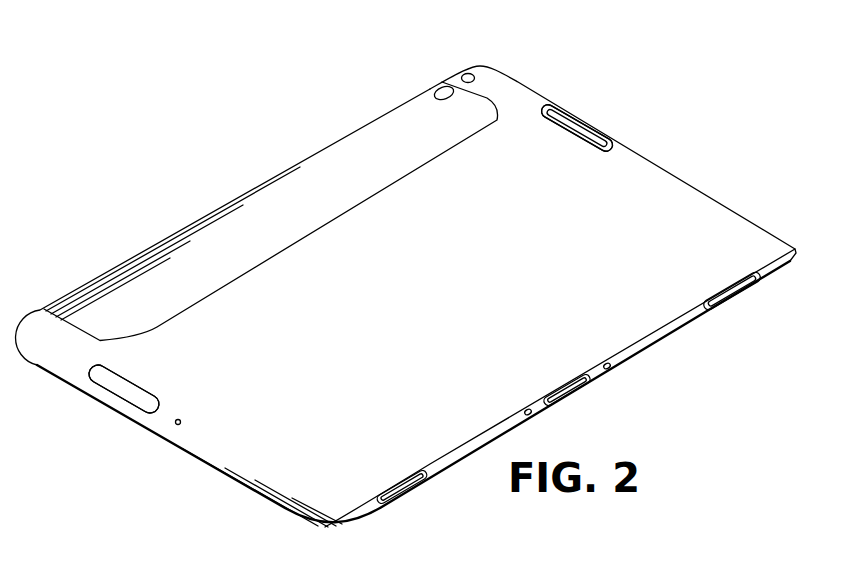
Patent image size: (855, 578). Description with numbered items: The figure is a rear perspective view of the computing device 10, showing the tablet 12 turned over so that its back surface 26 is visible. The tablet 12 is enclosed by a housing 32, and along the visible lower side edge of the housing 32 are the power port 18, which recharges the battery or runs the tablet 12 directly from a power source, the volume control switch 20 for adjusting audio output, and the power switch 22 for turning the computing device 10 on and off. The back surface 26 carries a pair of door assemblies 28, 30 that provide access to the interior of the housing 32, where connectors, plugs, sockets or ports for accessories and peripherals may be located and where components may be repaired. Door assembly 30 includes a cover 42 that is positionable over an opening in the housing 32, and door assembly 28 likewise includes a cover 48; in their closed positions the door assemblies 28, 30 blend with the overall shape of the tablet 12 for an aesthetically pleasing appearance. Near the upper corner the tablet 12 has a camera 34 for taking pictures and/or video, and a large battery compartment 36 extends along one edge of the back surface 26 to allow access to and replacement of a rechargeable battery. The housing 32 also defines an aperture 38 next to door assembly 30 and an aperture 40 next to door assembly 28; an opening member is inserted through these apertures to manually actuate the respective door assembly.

The computing device 10 is at (406, 297).
The tablet 12 is at (406, 301).
The power port 18 is at (740, 298).
The volume control switch 20 is at (571, 398).
The power switch 22 is at (408, 490).
The back surface 26 is at (683, 195).
The door assembly 28 is at (580, 115).
The door assembly 30 is at (118, 398).
The housing 32 is at (367, 514).
The camera 34 is at (468, 73).
The battery compartment 36 is at (342, 160).
The aperture 38 is at (181, 421).
The aperture 40 is at (522, 96).
The cover 42 is at (140, 395).
The cover 48 is at (590, 133).